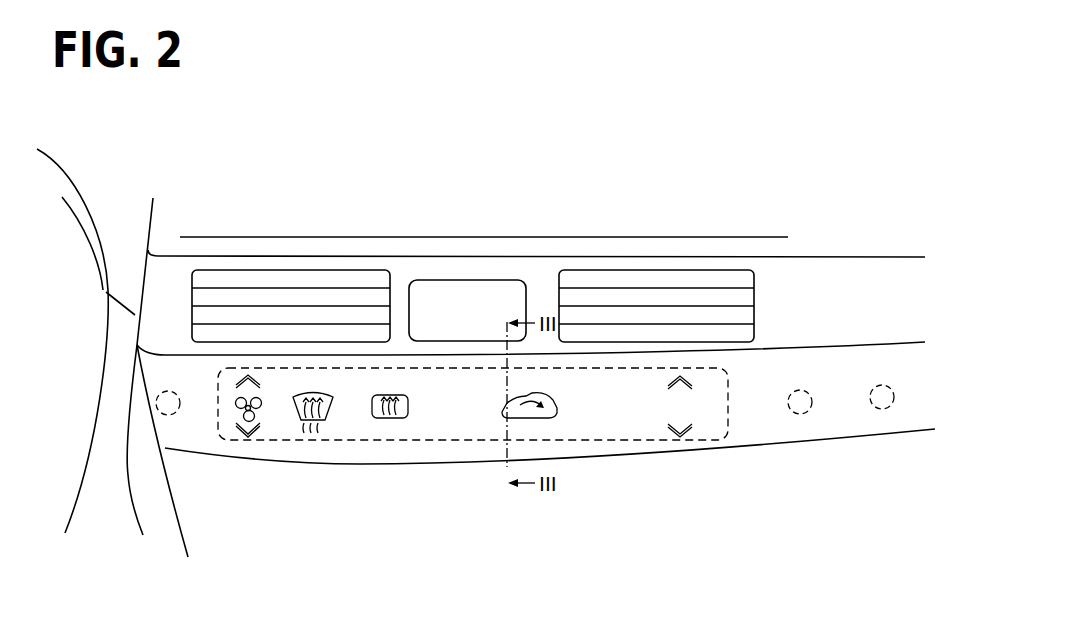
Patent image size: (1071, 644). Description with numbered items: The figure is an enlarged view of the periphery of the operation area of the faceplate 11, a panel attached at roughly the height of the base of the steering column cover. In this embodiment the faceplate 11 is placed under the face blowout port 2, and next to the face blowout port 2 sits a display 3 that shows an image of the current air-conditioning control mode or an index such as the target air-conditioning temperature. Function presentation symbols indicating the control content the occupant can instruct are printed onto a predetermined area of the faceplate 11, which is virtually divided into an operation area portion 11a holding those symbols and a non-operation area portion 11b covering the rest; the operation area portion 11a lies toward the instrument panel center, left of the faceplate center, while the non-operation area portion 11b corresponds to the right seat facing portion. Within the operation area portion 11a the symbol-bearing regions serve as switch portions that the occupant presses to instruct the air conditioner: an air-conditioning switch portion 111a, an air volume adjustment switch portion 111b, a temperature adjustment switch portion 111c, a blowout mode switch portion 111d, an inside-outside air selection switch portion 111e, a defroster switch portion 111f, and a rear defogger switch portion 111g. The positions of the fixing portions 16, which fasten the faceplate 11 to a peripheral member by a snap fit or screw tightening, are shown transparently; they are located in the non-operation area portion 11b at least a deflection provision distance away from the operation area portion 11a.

The face blowout port 2 is at (330, 268).
The display 3 is at (445, 280).
The faceplate 11 is at (803, 362).
The operation area portion 11a is at (730, 422).
The non-operation area portion 11b is at (843, 421).
The fixing portion 16 is at (176, 414).
The air-conditioning switch portion 111a is at (446, 439).
The air volume adjustment switch portion 111b is at (264, 440).
The temperature adjustment switch portion 111c is at (701, 439).
The blowout mode switch portion 111d is at (613, 439).
The inside-outside air selection switch portion 111e is at (499, 439).
The defroster switch portion 111f is at (317, 441).
The rear defogger switch portion 111g is at (393, 439).